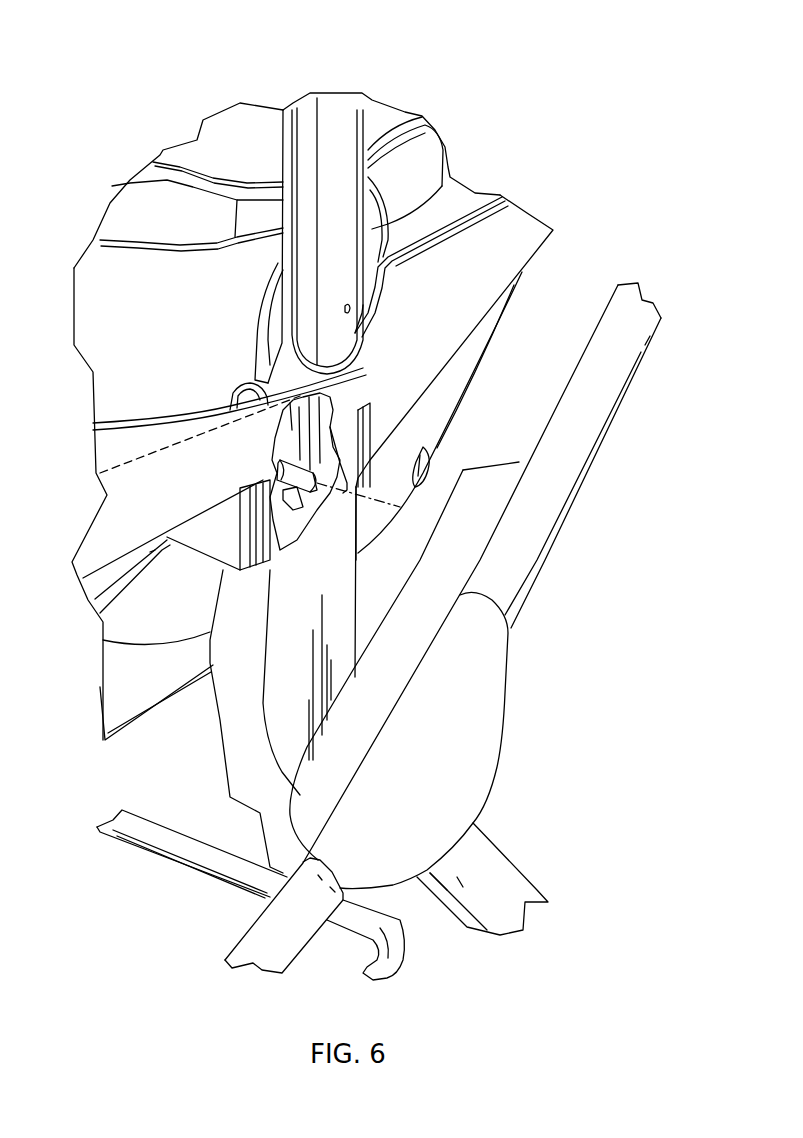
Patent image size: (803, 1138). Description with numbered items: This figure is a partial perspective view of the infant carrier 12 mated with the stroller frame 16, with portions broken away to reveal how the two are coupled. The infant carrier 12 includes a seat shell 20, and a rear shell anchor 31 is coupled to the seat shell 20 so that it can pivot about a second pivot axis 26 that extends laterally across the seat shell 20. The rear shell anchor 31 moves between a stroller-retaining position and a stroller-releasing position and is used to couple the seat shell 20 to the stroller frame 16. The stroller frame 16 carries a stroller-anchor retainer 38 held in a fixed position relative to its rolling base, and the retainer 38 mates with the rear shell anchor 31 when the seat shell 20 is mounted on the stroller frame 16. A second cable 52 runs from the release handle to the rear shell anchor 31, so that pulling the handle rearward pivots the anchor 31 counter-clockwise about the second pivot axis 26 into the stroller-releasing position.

The infant carrier 12 is at (411, 94).
The seat shell 20 is at (519, 240).
The stroller frame 16 is at (634, 481).
The second cable 52 is at (158, 452).
The rear shell anchor 31 is at (320, 405).
The stroller-anchor retainer 38 is at (278, 472).
The second pivot axis 26 is at (373, 505).